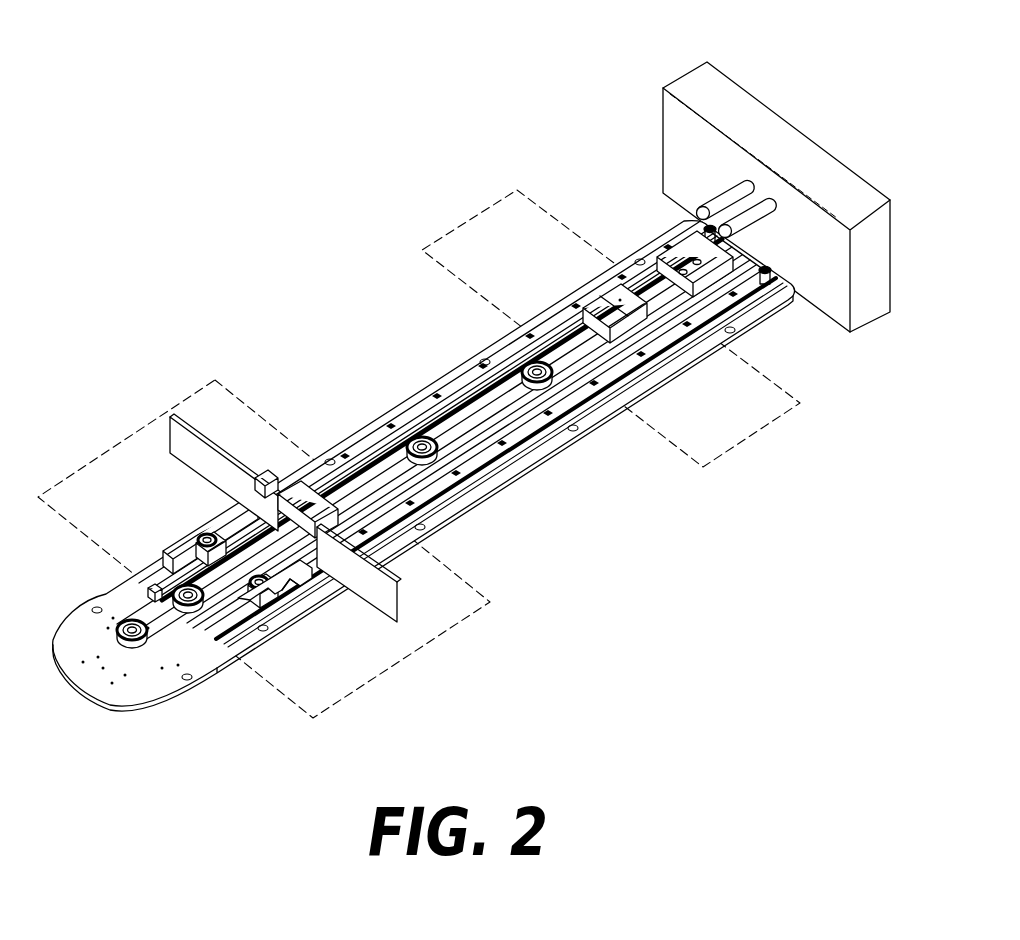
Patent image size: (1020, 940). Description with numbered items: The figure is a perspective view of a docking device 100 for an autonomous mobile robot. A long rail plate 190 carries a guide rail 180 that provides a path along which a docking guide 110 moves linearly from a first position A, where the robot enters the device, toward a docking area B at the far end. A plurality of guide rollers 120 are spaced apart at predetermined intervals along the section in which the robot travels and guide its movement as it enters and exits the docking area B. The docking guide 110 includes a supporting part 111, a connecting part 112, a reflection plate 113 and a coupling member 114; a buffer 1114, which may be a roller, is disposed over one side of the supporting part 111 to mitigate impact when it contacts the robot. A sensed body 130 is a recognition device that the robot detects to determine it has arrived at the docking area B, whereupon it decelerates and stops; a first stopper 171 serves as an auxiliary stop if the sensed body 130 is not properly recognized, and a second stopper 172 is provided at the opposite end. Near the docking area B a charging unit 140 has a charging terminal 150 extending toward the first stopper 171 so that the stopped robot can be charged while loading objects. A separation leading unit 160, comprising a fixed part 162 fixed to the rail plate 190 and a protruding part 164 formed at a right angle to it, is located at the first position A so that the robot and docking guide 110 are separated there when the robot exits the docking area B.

The docking device 100 is at (101, 62).
The docking guide 110 is at (165, 424).
The supporting part 111 is at (240, 532).
The buffer 1114 is at (198, 540).
The connecting part 112 is at (302, 484).
The reflection plate 113 is at (392, 605).
The coupling member 114 is at (274, 480).
The guide roller 120 is at (418, 435).
The sensed body 130 is at (612, 312).
The charging unit 140 is at (690, 83).
The charging terminal 150 is at (720, 205).
The separation leading unit 160 is at (304, 616).
The fixed part 162 is at (298, 607).
The protruding part 164 is at (302, 600).
The first stopper 171 is at (692, 292).
The second stopper 172 is at (150, 592).
The guide rail 180 is at (437, 513).
The rail plate 190 is at (508, 477).
The first position A is at (405, 662).
The docking area B is at (735, 448).